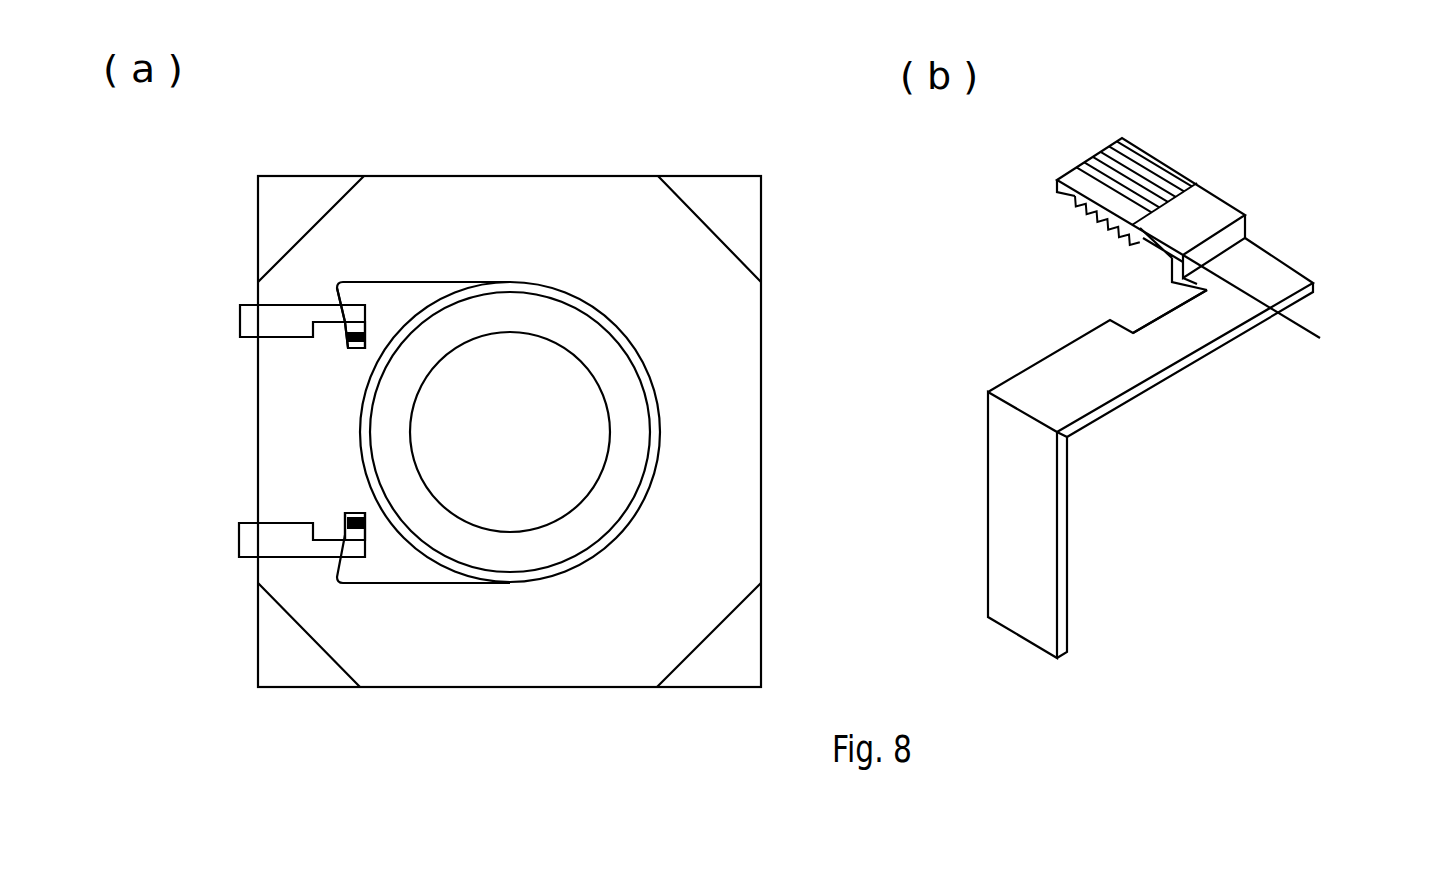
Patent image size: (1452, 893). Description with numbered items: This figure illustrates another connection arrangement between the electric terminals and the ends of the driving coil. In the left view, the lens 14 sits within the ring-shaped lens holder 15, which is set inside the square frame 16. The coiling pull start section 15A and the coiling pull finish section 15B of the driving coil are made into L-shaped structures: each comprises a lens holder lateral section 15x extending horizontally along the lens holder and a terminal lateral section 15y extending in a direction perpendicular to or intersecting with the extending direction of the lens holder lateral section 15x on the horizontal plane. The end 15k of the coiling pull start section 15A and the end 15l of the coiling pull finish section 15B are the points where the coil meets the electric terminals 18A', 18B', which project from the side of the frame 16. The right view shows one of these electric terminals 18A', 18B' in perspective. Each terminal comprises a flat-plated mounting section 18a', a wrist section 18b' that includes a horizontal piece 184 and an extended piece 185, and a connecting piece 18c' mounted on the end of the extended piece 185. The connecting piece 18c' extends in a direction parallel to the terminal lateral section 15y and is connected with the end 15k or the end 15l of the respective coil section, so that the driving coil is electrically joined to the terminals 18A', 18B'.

The lens 14 is at (597, 348).
The lens holder 15 is at (651, 447).
The holder base frame 16 is at (560, 195).
The coiling pull start section 15A is at (432, 282).
The coiling pull finish section 15B is at (423, 583).
The lens holder lateral section 15x is at (360, 282).
The terminal lateral section 15y is at (345, 332).
The end of the coiling pull start section 15k is at (345, 348).
The end of the coiling pull finish section 15l is at (345, 515).
The electric terminal 18A' is at (246, 321).
The electric terminal 18B' is at (249, 535).
The flat-plated mounting section 18a' is at (1088, 525).
The wrist section 18b' is at (1216, 382).
The connecting piece 18c' is at (1218, 208).
The horizontal piece 184 is at (1150, 360).
The extended piece 185 is at (1220, 247).